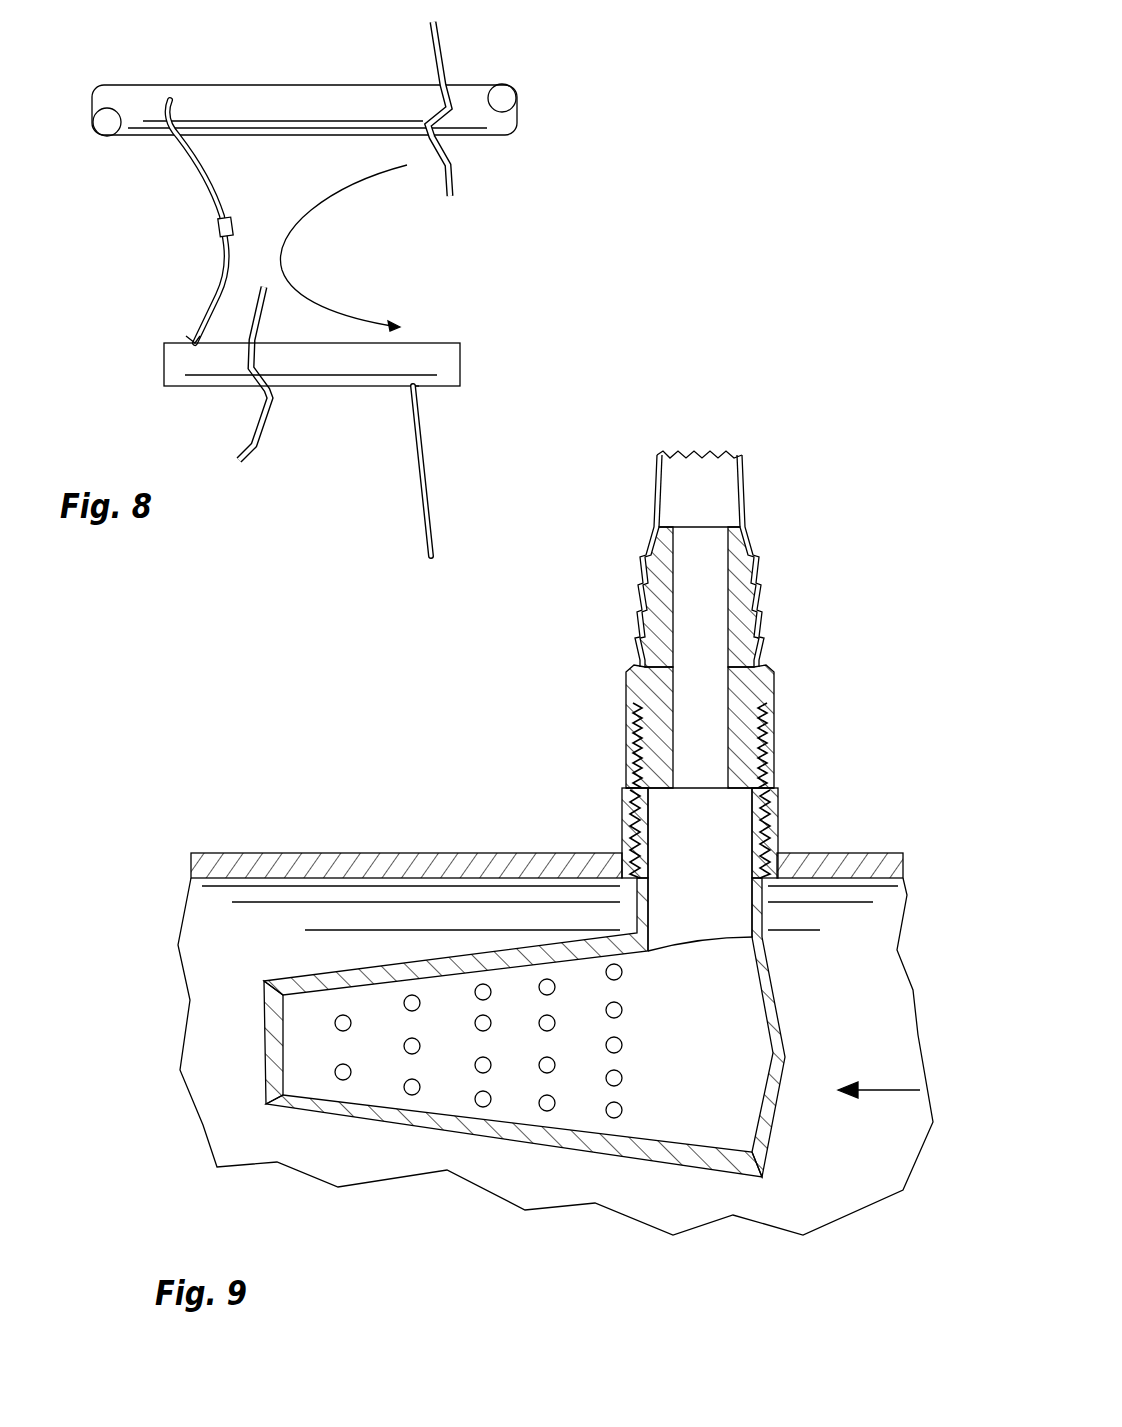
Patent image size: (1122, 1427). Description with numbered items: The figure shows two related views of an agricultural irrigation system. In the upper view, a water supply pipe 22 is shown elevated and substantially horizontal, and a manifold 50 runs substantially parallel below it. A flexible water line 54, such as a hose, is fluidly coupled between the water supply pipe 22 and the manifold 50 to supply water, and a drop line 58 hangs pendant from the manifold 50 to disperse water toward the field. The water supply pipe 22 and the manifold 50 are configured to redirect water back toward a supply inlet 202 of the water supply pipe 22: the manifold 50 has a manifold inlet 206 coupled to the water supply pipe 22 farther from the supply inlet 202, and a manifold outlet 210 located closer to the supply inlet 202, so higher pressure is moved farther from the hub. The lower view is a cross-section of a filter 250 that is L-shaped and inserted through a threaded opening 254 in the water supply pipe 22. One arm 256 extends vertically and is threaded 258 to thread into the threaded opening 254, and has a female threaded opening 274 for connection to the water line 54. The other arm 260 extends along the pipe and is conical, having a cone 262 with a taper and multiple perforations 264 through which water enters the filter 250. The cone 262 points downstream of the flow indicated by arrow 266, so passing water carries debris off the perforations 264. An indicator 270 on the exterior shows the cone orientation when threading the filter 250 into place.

In FIG. 8, the water supply pipe 22 is at (275, 103).
In FIG. 9, the water supply pipe 22 is at (237, 1087).
In FIG. 8, the supply inlet 202 is at (500, 97).
In FIG. 8, the water line 54 is at (217, 197).
In FIG. 9, the water line 54 is at (723, 477).
In FIG. 8, the manifold inlet 206 is at (193, 345).
In FIG. 8, the manifold 50 is at (370, 365).
In FIG. 8, the manifold outlet 210 is at (422, 390).
In FIG. 8, the drop line 58 is at (430, 498).
In FIG. 9, the indicator 270 is at (633, 775).
In FIG. 9, the female threaded opening 274 is at (767, 757).
In FIG. 9, the threaded opening 254 is at (775, 833).
In FIG. 9, the threads 258 is at (753, 857).
In FIG. 9, the filter 250 is at (570, 1036).
In FIG. 9, the cone 262 is at (342, 1100).
In FIG. 9, the other arm 260 is at (547, 1143).
In FIG. 9, the one arm 256 is at (783, 1023).
In FIG. 9, the perforations 264 is at (408, 997).
In FIG. 9, the arrow 266 is at (883, 1090).